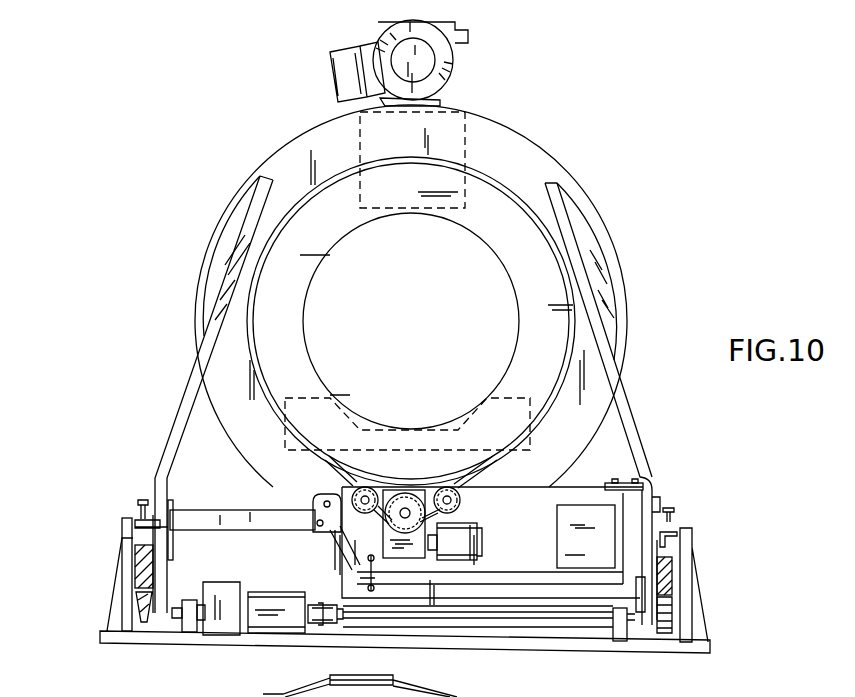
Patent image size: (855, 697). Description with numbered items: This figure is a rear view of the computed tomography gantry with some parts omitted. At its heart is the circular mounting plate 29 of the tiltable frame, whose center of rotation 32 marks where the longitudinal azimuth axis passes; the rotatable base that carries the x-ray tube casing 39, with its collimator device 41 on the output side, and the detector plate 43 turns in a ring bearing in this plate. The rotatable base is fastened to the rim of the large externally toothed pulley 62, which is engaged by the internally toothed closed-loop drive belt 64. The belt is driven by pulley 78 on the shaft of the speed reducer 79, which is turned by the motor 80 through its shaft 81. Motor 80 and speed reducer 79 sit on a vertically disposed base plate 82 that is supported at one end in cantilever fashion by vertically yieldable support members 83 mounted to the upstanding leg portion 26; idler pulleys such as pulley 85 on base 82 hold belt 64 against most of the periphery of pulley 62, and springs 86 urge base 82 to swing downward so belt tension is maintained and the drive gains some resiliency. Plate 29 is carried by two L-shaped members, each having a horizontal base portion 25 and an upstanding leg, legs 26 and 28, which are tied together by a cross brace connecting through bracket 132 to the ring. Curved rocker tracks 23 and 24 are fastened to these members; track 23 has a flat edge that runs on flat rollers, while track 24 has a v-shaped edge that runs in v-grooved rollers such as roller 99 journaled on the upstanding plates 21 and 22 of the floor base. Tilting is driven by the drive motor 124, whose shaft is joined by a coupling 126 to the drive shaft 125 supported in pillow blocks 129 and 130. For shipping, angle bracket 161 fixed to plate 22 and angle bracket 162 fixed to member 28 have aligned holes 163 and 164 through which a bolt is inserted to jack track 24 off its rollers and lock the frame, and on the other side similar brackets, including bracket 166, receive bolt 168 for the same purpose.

The upstanding plate 21 is at (684, 580).
The upstanding plate 22 is at (123, 608).
The curved rocker track 23 is at (670, 587).
The curved rocker track 24 is at (140, 565).
The horizontally extending base portion 25 is at (655, 498).
The upstanding leg portion 26 is at (628, 400).
The upstanding leg / L-shaped member 28 is at (196, 400).
The circular mounting plate 29 is at (555, 158).
The center of rotation 32 is at (412, 318).
The x-ray tube casing 39 is at (464, 42).
The collimator device 41 is at (480, 130).
The plate 43 is at (500, 406).
The pulley 62 is at (281, 384).
The drive belt 64 is at (337, 463).
The pulley 78 is at (407, 493).
The speed reducer 79 is at (407, 551).
The motor 80 is at (472, 545).
The motor shaft 81 is at (430, 558).
The base plate 82 is at (580, 500).
The vertically yieldable support members 83 is at (626, 486).
The idler pulley 85 is at (461, 500).
The springs 86 is at (362, 577).
The roller 99 is at (143, 618).
The drive motor 124 is at (277, 618).
The drive shaft 125 is at (562, 630).
The coupling 126 is at (335, 626).
The pillow block 129 is at (620, 642).
The pillow block 130 is at (190, 623).
The bracket 132 is at (310, 508).
The angle bracket 161 is at (140, 520).
The angle bracket 162 is at (158, 530).
The hole 163 is at (133, 545).
The hole 164 is at (170, 512).
The angle bracket 166 is at (678, 545).
The bolt 168 is at (677, 512).